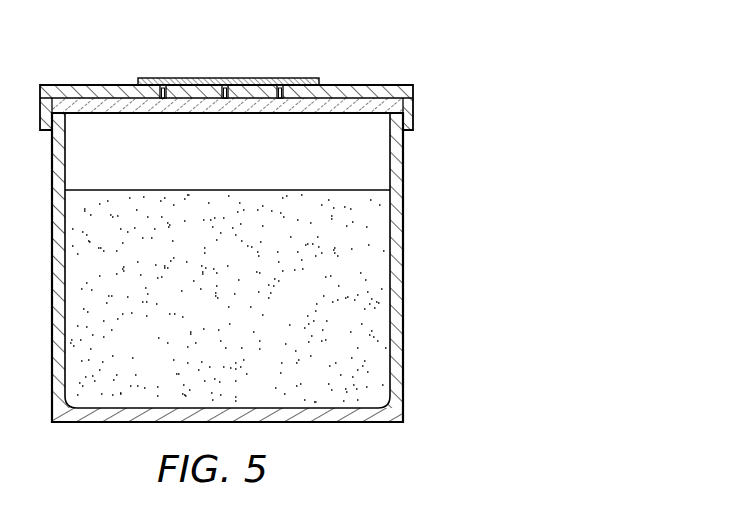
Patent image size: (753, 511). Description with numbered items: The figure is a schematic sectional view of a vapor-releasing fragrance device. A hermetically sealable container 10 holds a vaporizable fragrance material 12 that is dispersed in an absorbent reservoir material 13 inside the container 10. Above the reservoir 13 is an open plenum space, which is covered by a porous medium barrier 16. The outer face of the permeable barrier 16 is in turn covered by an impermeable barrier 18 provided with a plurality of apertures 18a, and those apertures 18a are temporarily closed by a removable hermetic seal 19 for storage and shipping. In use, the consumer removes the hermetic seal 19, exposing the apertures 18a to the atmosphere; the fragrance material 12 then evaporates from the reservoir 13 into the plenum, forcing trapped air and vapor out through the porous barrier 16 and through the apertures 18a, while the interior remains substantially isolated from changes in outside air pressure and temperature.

The container 10 is at (398, 406).
The vaporizable fragrance material 12 is at (360, 311).
The absorbent reservoir material 13 is at (370, 237).
The porous medium barrier 16 is at (360, 110).
The impermeable barrier 18 is at (355, 90).
The apertures 18a is at (277, 80).
The removable hermetic seal 19 is at (193, 78).